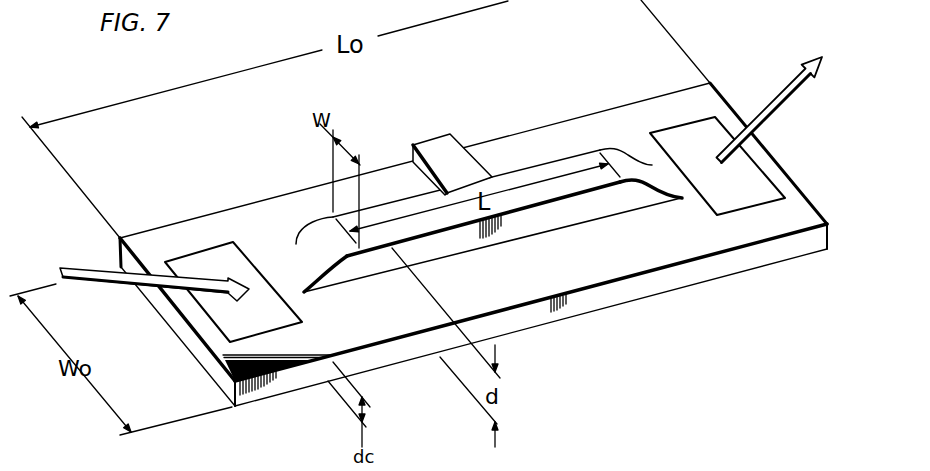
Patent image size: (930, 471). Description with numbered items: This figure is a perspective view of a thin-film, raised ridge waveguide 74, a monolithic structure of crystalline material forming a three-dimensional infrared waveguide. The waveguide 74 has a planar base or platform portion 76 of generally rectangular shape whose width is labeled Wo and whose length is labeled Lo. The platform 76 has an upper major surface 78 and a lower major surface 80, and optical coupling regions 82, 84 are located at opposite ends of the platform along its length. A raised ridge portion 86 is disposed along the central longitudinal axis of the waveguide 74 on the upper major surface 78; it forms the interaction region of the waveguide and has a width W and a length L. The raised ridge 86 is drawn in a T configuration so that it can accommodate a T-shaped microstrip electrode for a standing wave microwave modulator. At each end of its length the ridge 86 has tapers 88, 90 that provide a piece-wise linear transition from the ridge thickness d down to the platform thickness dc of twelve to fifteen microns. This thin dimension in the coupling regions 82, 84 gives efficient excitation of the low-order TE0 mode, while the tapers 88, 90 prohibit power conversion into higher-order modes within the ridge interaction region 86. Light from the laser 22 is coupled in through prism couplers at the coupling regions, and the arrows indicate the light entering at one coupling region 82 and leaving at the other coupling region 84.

The laser 22 is at (93, 270).
The raised ridge waveguide 74 is at (473, 208).
The platform portion 76 is at (607, 291).
The upper major surface 78 is at (718, 248).
The lower major surface 80 is at (692, 288).
The coupling region 82 is at (198, 262).
The coupling region 84 is at (683, 138).
The raised ridge portion 86 is at (513, 180).
The taper 88 is at (313, 250).
The taper 90 is at (634, 166).